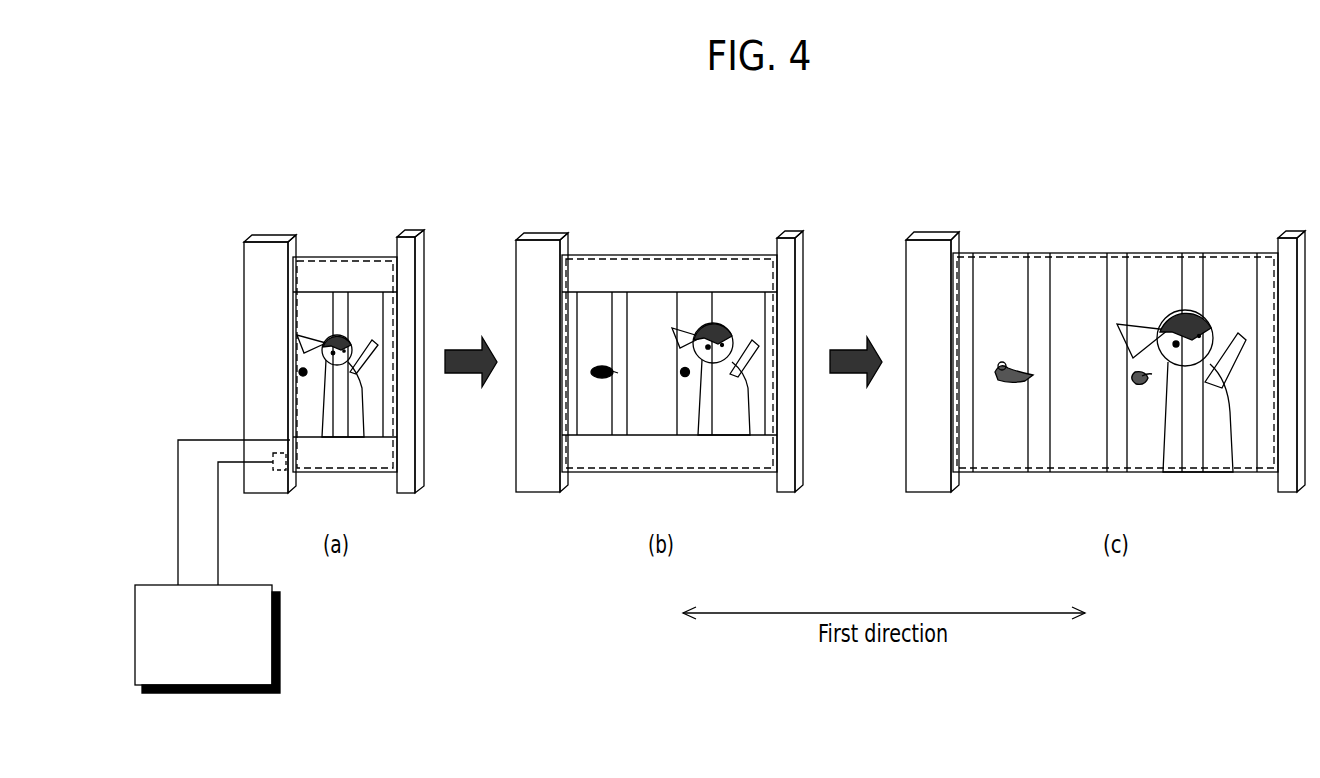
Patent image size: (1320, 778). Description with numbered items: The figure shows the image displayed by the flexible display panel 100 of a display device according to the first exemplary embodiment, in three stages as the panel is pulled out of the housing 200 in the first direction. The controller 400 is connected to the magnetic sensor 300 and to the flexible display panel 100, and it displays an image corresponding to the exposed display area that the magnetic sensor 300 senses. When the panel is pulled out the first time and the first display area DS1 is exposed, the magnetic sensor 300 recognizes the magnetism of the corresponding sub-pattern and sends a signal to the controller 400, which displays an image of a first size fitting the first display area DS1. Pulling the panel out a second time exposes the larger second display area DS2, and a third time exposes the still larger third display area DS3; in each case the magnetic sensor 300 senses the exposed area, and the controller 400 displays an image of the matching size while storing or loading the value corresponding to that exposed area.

The flexible display panel 100 is at (313, 258).
The housing 200 is at (257, 318).
The magnetic sensor 300 is at (277, 470).
The controller 400 is at (280, 637).
The first display area DS1 is at (360, 257).
The second display area DS2 is at (661, 262).
The third display area DS3 is at (1143, 258).